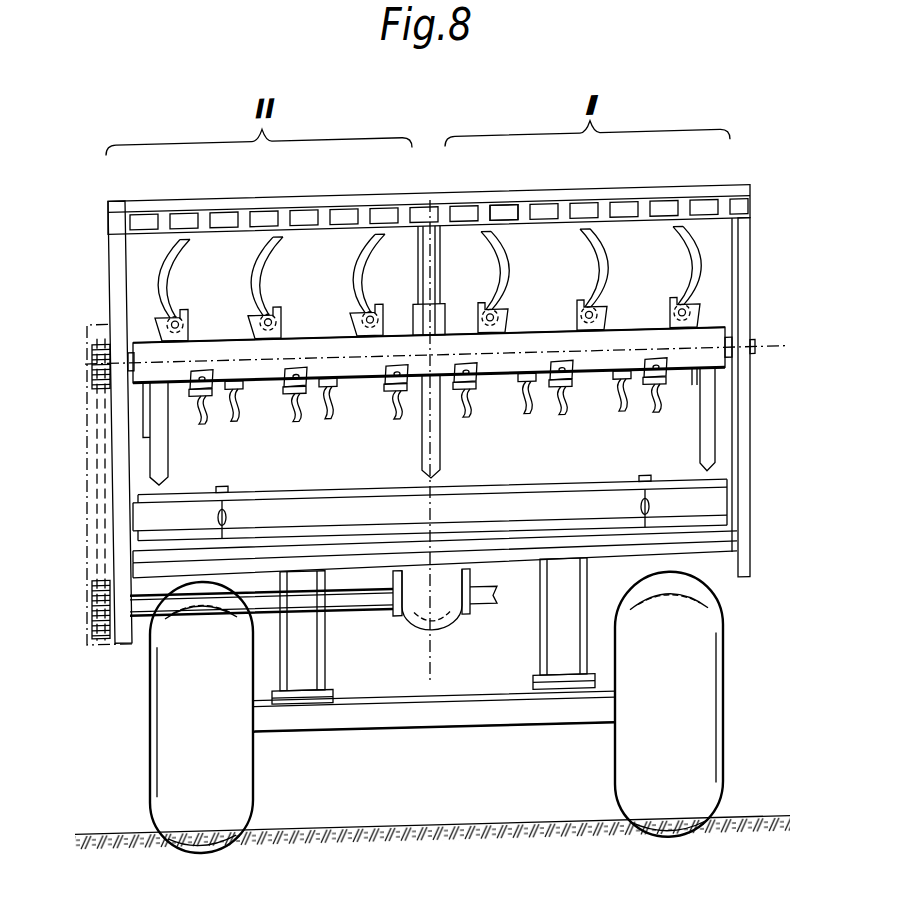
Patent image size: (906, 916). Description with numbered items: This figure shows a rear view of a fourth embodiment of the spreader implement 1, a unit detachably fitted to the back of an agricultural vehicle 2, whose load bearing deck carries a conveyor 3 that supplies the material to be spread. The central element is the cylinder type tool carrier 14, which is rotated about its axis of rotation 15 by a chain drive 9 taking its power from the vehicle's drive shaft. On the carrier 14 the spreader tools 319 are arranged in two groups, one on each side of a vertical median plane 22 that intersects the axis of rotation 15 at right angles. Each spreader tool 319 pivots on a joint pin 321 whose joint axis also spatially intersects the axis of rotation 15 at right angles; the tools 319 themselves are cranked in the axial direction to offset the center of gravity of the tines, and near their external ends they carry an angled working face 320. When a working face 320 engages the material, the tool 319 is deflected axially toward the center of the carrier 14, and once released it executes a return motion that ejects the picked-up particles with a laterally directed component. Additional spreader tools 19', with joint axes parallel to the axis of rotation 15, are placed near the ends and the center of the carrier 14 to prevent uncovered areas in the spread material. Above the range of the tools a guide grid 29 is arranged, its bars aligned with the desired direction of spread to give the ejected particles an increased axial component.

The spreader implement 1 is at (752, 452).
The agricultural vehicle 2 is at (712, 568).
The conveyor 3 is at (543, 576).
The chain drive 9 is at (87, 439).
The cylinder type tool carrier 14 is at (632, 333).
The axis of rotation 15 is at (714, 354).
The additional spreader tools 19' is at (429, 431).
The vertical median plane 22 is at (430, 553).
The guide grid 29 is at (502, 210).
The spreader tools 319 is at (362, 271).
The angled working face 320 is at (181, 232).
The joint pins 321 is at (181, 308).